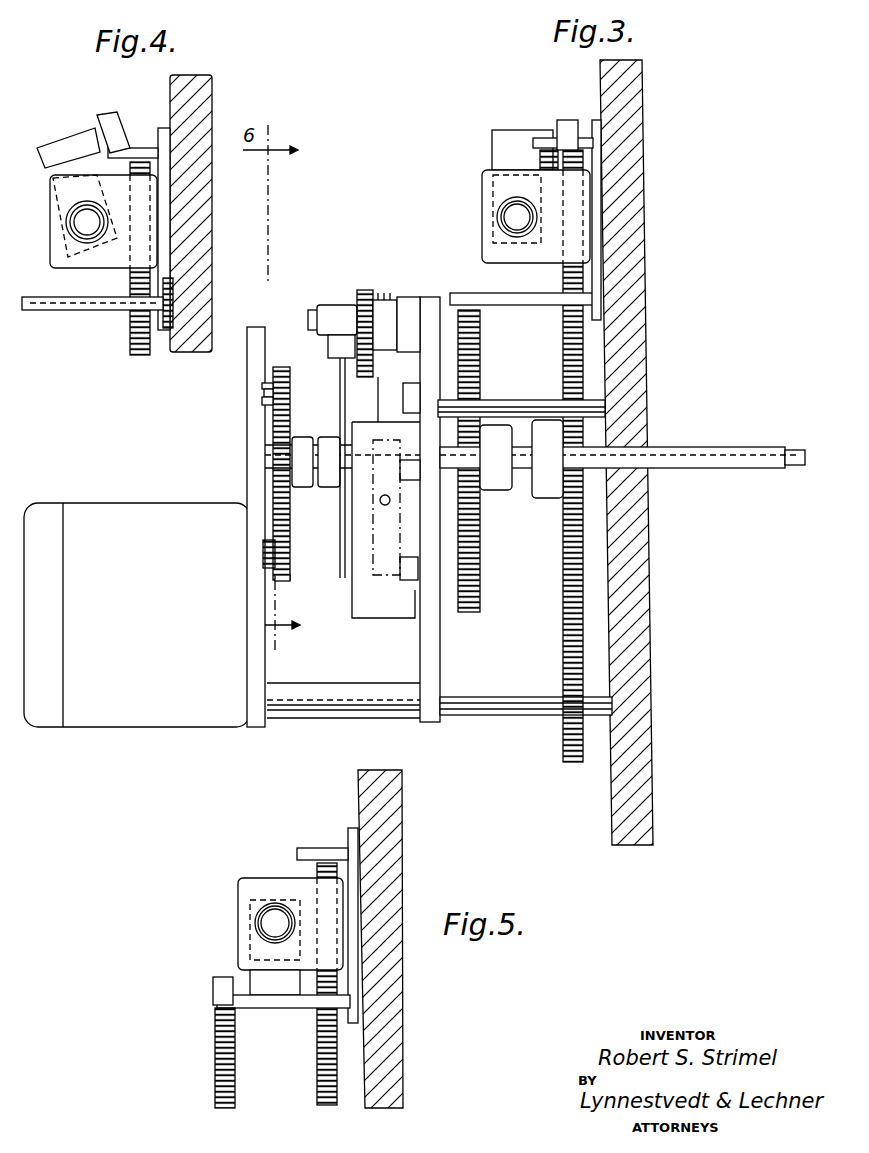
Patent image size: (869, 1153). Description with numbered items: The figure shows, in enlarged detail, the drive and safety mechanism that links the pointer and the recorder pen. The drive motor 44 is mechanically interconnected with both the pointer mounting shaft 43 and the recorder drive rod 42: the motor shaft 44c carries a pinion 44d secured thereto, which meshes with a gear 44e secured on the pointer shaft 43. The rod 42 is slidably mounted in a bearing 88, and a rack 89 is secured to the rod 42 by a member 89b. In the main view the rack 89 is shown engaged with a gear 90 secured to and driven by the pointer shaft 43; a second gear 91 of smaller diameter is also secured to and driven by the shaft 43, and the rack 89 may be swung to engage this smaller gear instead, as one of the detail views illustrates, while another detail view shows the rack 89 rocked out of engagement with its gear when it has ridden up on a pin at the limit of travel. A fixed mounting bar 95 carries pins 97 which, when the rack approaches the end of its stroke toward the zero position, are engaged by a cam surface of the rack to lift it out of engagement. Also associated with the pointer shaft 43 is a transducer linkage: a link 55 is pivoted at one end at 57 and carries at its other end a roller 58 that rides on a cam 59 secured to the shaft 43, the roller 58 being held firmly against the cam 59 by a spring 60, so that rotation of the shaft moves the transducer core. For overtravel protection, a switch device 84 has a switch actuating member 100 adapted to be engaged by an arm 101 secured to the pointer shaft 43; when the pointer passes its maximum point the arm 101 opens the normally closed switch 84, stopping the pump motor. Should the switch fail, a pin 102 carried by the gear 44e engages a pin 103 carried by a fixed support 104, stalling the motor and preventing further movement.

In FIG. 3, the recorder drive rod 42 is at (497, 222).
In FIG. 3, the pointer mounting shaft 43 is at (702, 447).
In FIG. 3, the drive motor 44 is at (115, 503).
In FIG. 3, the motor shaft 44c is at (266, 542).
In FIG. 3, the pinion 44d is at (312, 578).
In FIG. 3, the gear 44e is at (282, 365).
In FIG. 3, the link 55 is at (365, 380).
In FIG. 3, the pivot 57 is at (316, 308).
In FIG. 3, the roller 58 is at (345, 305).
In FIG. 3, the cam 59 is at (340, 380).
In FIG. 3, the spring 60 is at (365, 290).
In FIG. 3, the switch device 84 is at (393, 618).
In FIG. 4, the bearing 88 is at (60, 259).
In FIG. 3, the bearing 88 is at (482, 198).
In FIG. 5, the bearing 88 is at (243, 882).
In FIG. 4, the rack 89 is at (115, 115).
In FIG. 3, the rack 89 is at (568, 120).
In FIG. 5, the rack 89 is at (220, 977).
In FIG. 4, the member 89b is at (60, 145).
In FIG. 3, the member 89b is at (492, 152).
In FIG. 5, the member 89b is at (268, 1008).
In FIG. 4, the gear 90 is at (140, 357).
In FIG. 3, the gear 90 is at (562, 278).
In FIG. 5, the gear 90 is at (330, 1105).
In FIG. 3, the second gear 91 is at (482, 583).
In FIG. 5, the second gear 91 is at (215, 1063).
In FIG. 3, the fixed mounting bar 95 is at (598, 325).
In FIG. 5, the fixed mounting bar 95 is at (355, 830).
In FIG. 3, the pin 97 is at (512, 305).
In FIG. 5, the pin 97 is at (312, 848).
In FIG. 3, the switch actuating member 100 is at (372, 560).
In FIG. 3, the arm 101 is at (390, 300).
In FIG. 3, the pin 102 is at (266, 404).
In FIG. 3, the pin 103 is at (262, 380).
In FIG. 3, the fixed support 104 is at (264, 394).